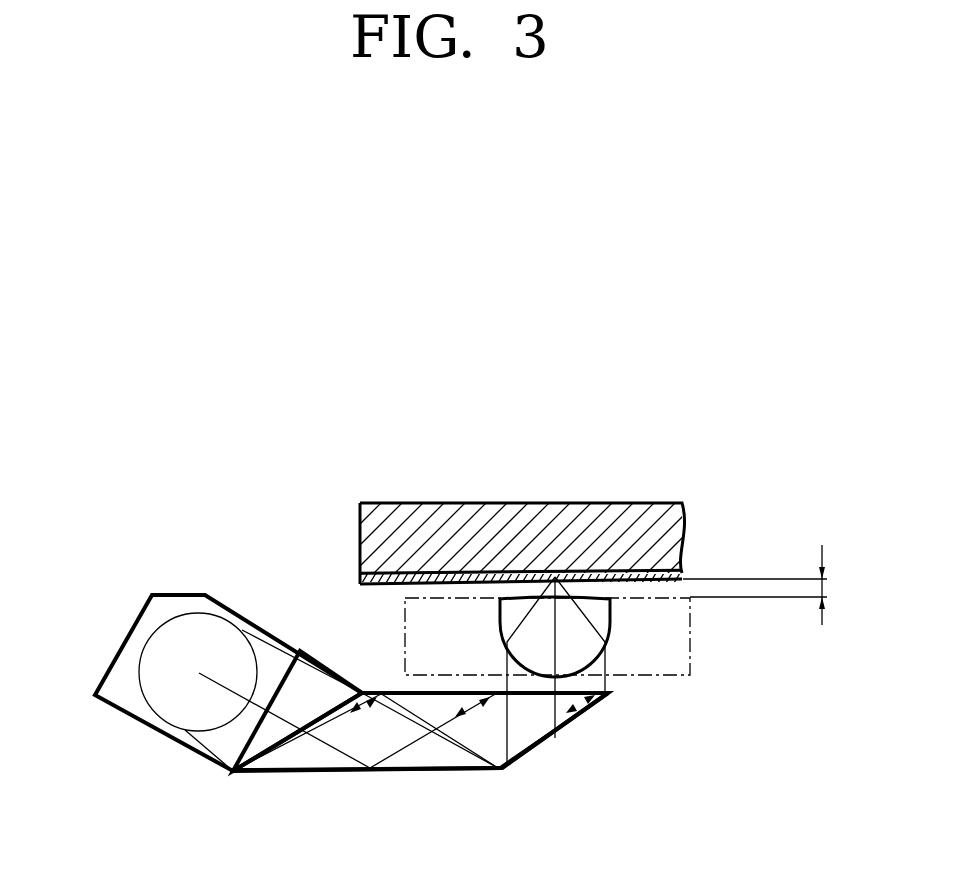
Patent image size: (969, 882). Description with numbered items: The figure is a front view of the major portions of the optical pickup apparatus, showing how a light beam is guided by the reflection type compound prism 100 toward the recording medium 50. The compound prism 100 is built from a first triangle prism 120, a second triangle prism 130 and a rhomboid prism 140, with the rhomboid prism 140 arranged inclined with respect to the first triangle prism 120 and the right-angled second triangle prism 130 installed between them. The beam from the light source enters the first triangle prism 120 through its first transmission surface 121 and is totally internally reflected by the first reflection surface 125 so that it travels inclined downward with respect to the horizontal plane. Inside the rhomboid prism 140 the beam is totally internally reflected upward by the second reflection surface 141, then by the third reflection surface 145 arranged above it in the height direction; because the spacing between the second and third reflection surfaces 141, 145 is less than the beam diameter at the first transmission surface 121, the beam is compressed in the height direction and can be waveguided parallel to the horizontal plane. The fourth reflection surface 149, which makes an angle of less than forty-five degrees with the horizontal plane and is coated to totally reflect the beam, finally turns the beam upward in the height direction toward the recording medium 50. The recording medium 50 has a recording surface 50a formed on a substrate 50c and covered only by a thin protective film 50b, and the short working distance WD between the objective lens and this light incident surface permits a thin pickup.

The recording medium 50 is at (539, 548).
The recording surface 50a is at (660, 583).
The protective film 50b is at (683, 579).
The substrate 50c is at (682, 527).
The reflection type compound prism 100 is at (147, 566).
The first triangle prism 120 is at (110, 667).
The first transmission surface 121 is at (159, 700).
The first reflection surface 125 is at (122, 700).
The second triangle prism 130 is at (263, 738).
The rhomboid prism 140 is at (444, 769).
The second reflection surface 141 is at (415, 763).
The third reflection surface 145 is at (535, 693).
The fourth reflection surface 149 is at (578, 712).
The working distance WD is at (782, 585).